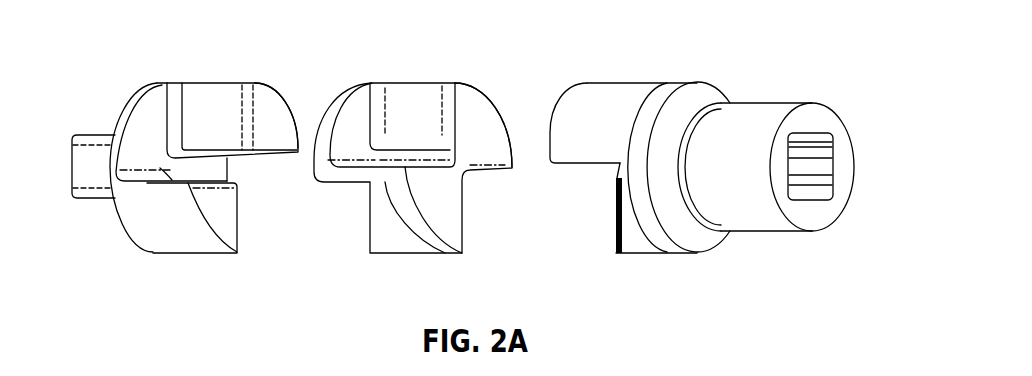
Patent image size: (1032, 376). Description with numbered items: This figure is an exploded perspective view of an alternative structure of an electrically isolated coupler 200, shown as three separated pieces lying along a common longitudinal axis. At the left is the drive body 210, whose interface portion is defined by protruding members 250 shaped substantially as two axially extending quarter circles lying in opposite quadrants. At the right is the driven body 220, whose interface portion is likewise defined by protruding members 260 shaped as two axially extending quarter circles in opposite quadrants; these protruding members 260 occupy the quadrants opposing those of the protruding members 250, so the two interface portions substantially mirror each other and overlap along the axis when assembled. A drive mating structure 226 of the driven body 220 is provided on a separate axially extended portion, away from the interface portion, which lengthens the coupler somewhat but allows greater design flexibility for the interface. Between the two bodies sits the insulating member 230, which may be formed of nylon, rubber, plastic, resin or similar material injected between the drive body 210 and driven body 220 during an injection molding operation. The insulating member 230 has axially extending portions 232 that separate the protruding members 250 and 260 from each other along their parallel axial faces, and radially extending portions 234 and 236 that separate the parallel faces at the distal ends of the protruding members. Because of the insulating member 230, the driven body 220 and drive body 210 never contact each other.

The electrically isolated coupler 200 is at (131, 46).
The drive body 210 is at (141, 83).
The protruding members 250 is at (270, 110).
The insulating member 230 is at (453, 43).
The axially extending portions 232 is at (418, 105).
The radially extending portion 234 is at (343, 110).
The radially extending portion 236 is at (485, 148).
The driven body 220 is at (773, 45).
The protruding members 260 is at (602, 103).
The drive mating structure 226 is at (817, 152).